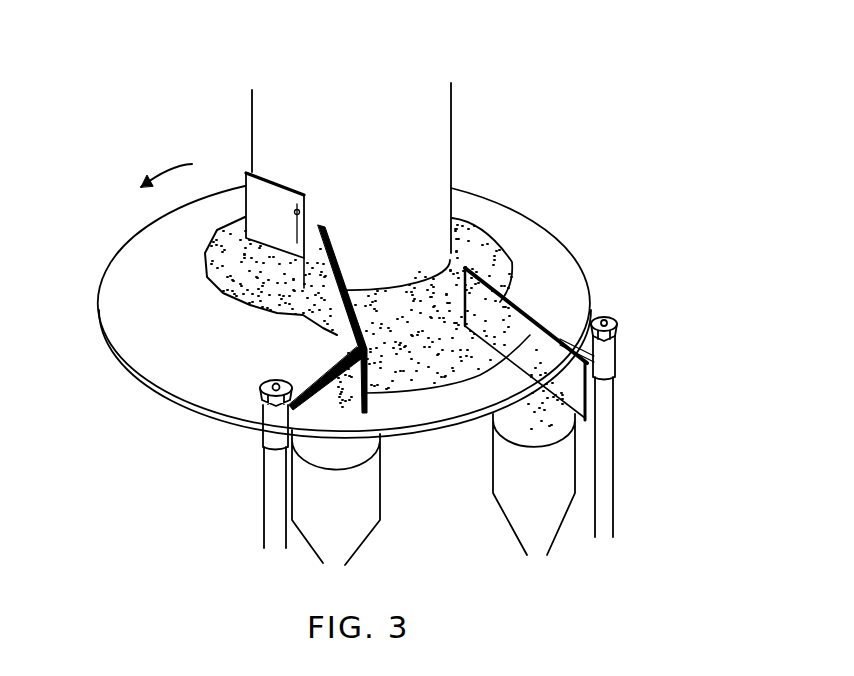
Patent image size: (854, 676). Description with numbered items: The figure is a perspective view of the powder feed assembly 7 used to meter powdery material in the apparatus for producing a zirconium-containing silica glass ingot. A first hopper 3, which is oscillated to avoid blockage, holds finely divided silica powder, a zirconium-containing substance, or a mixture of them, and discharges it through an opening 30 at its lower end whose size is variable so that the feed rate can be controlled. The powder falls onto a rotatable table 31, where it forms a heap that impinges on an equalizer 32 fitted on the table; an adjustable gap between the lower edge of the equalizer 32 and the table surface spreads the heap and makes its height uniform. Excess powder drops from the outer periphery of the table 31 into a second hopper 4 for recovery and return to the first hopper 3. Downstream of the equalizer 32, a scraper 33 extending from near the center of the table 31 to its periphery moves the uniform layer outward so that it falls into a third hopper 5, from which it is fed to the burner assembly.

The powder feed assembly 7 is at (211, 107).
The first hopper 3 is at (452, 105).
The opening 30 is at (245, 240).
The rotatable table 31 is at (530, 215).
The equalizer 32 is at (337, 258).
The scraper 33 is at (527, 310).
The second hopper 4 is at (366, 535).
The third hopper 5 is at (505, 517).